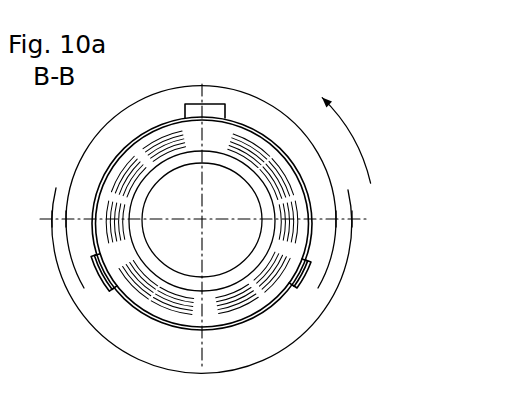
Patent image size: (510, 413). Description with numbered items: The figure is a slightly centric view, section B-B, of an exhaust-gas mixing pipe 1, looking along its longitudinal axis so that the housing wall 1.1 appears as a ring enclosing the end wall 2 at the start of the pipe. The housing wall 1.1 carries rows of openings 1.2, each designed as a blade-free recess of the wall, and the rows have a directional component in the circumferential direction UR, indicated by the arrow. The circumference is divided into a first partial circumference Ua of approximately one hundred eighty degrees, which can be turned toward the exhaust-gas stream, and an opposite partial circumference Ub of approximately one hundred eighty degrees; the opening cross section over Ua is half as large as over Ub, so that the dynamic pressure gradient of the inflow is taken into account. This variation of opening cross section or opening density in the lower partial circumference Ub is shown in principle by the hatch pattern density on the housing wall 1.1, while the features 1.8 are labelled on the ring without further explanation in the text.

The exhaust-gas mixing pipe 1 is at (220, 66).
The housing wall 1.1 is at (122, 198).
The openings 1.2 is at (128, 285).
The locking lugs 1.8 is at (93, 280).
The end wall 2 is at (188, 212).
The first partial circumference Ua is at (281, 110).
The opposite partial circumference Ub is at (345, 263).
The circumferential direction UR is at (345, 125).